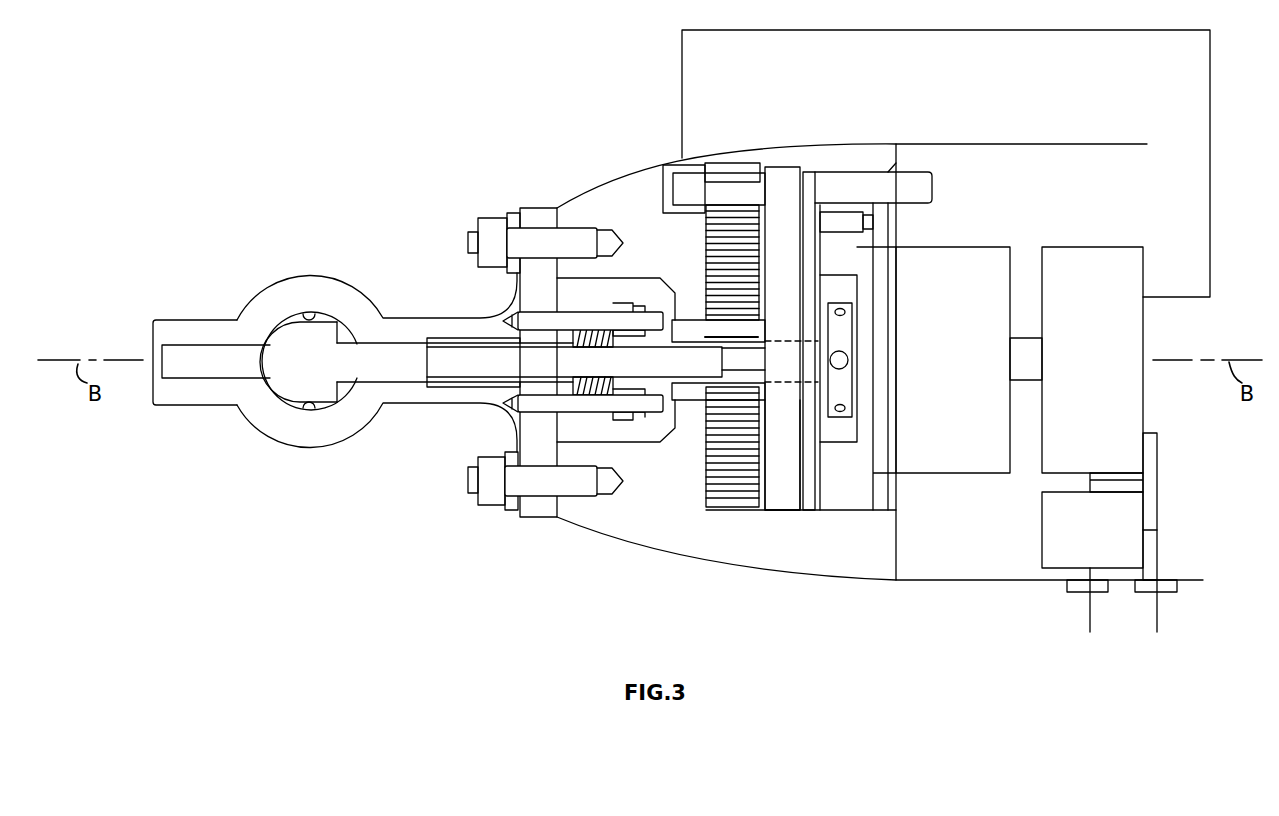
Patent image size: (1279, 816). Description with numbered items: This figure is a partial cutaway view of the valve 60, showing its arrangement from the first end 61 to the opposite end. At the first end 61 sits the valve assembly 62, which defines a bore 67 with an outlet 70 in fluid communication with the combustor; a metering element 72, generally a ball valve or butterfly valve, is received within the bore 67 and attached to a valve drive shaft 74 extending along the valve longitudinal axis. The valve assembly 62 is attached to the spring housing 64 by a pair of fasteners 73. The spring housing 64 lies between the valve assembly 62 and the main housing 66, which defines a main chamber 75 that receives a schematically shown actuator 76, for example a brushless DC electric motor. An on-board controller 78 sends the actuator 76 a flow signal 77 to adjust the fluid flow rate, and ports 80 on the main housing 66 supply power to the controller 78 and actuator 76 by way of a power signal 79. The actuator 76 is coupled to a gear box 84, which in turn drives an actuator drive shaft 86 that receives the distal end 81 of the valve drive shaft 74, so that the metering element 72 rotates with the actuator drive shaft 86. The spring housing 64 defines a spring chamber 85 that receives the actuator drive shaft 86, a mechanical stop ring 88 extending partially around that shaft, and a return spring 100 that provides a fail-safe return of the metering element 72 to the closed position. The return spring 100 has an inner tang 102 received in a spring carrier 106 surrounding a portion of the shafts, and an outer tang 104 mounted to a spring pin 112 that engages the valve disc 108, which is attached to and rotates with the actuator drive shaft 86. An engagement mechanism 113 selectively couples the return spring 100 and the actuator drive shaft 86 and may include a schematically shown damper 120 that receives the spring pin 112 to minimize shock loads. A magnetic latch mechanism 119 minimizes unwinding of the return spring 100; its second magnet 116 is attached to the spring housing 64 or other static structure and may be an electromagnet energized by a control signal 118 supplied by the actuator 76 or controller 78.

The valve 60 is at (265, 135).
The first end 61 is at (150, 403).
The valve assembly 62 is at (263, 284).
The spring housing 64 is at (586, 199).
The main housing 66 is at (996, 144).
The bore 67 is at (310, 316).
The outlet 70 is at (306, 412).
The metering element 72 is at (288, 390).
The fasteners 73 is at (470, 240).
The valve drive shaft 74 is at (446, 355).
The main chamber 75 is at (1030, 194).
The actuator 76 is at (1143, 270).
The flow signal 77 is at (1090, 483).
The on-board controller 78 is at (1042, 520).
The power signal 79 is at (1157, 487).
The ports 80 is at (1078, 592).
The distal end 81 is at (727, 362).
The gear box 84 is at (945, 475).
The spring chamber 85 is at (807, 505).
The actuator drive shaft 86 is at (837, 432).
The mechanical stop ring 88 is at (862, 238).
The return spring 100 is at (707, 507).
The inner tang 102 is at (706, 392).
The outer tang 104 is at (728, 172).
The spring carrier 106 is at (687, 393).
The valve disc 108 is at (782, 493).
The spring pin 112 is at (850, 182).
The engagement mechanism 113 is at (750, 94).
The second magnet 116 is at (662, 181).
The control signal 118 is at (1210, 143).
The magnetic latch mechanism 119 is at (708, 141).
The damper 120 is at (808, 170).